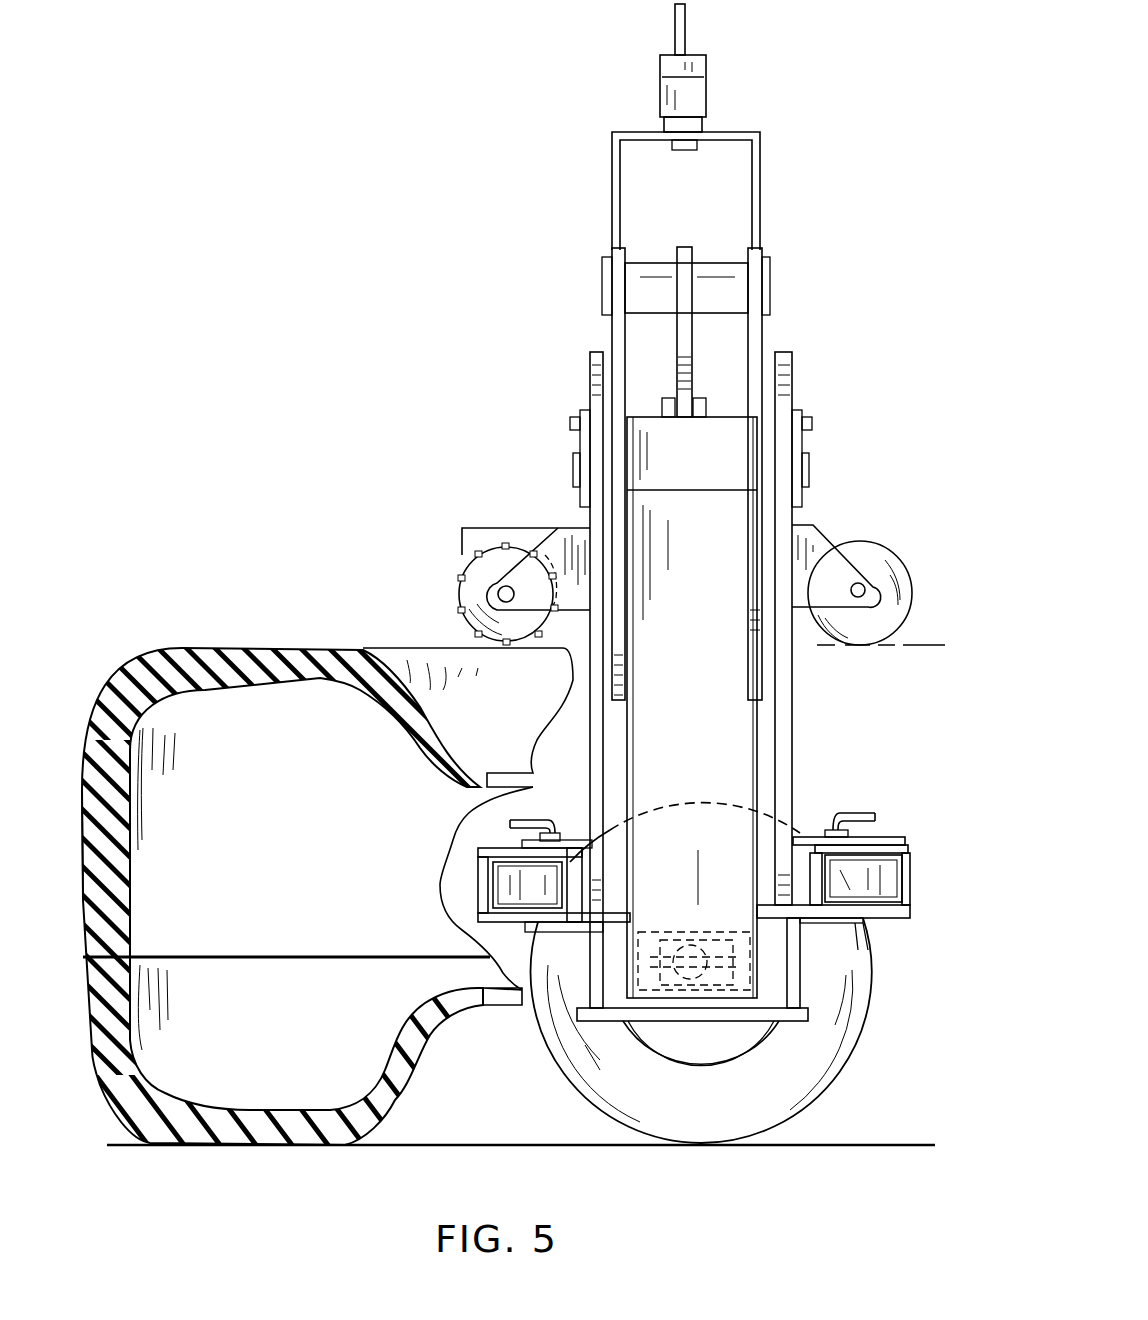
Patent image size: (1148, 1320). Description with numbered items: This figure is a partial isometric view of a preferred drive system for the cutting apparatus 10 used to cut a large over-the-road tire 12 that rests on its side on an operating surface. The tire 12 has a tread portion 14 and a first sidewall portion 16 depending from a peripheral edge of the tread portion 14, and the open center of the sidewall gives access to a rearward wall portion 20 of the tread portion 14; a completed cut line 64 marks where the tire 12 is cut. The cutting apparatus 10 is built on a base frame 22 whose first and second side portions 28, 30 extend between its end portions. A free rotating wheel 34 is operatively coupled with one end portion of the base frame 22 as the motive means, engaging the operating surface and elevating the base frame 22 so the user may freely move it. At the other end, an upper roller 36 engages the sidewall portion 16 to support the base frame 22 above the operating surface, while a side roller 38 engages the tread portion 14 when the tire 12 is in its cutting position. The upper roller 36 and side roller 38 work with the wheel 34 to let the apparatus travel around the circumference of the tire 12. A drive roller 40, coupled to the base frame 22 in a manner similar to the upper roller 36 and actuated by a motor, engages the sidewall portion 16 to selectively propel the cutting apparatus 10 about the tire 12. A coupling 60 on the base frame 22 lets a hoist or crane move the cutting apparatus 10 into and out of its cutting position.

The cutting apparatus 10 is at (568, 332).
The over-the-road tire 12 is at (506, 837).
The tread portion 14 is at (80, 797).
The first sidewall portion 16 is at (243, 648).
The rearward wall portion 20 is at (130, 853).
The base frame 22 is at (785, 787).
The first side portion 28 is at (793, 692).
The second side portion 30 is at (593, 730).
The free rotating wheel 34 is at (810, 1075).
The upper roller 36 is at (878, 562).
The side roller 38 is at (513, 893).
The drive roller 40 is at (465, 588).
The coupling 60 is at (686, 18).
The completed cut line 64 is at (273, 950).